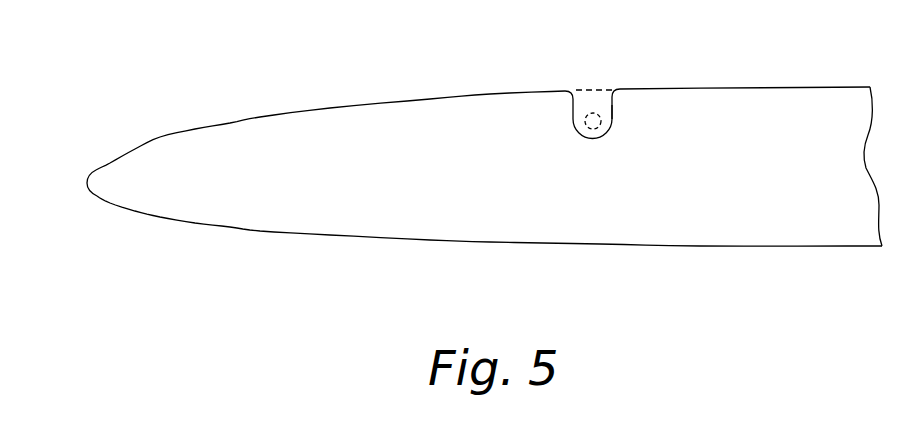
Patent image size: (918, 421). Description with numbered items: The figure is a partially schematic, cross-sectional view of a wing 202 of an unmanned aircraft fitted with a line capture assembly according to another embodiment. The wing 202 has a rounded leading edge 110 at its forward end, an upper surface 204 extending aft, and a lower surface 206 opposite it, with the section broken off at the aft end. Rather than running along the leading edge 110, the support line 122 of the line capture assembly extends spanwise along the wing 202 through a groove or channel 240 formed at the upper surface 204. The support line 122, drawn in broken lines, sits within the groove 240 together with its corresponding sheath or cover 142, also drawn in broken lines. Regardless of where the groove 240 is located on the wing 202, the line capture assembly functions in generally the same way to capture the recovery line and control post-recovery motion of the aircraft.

The leading edge 110 is at (496, 156).
The wing 202 is at (507, 156).
The upper surface 204 is at (712, 87).
The second surface 206 is at (763, 247).
The sheath or cover 142 is at (598, 97).
The support line 122 is at (588, 133).
The groove or channel 240 is at (613, 123).